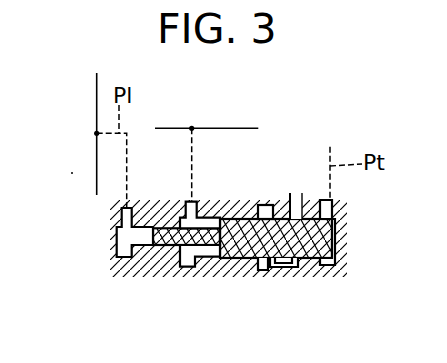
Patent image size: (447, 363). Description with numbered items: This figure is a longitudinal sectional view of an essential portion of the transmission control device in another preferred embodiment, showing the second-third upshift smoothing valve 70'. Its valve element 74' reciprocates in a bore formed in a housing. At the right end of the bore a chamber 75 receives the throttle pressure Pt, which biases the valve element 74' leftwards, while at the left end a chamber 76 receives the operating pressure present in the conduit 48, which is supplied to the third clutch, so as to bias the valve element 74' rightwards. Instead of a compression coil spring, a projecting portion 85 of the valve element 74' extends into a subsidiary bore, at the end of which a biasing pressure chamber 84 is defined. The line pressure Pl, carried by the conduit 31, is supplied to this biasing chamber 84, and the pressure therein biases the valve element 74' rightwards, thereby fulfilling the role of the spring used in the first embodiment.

The conduit 31 is at (95, 160).
The conduit 48 is at (228, 128).
The second-third upshift smoothing valve 70' is at (276, 277).
The valve element 74' is at (249, 194).
The chamber 75 is at (328, 265).
The chamber 76 is at (190, 262).
The biasing pressure chamber 84 is at (143, 235).
The projecting portion 85 is at (160, 238).